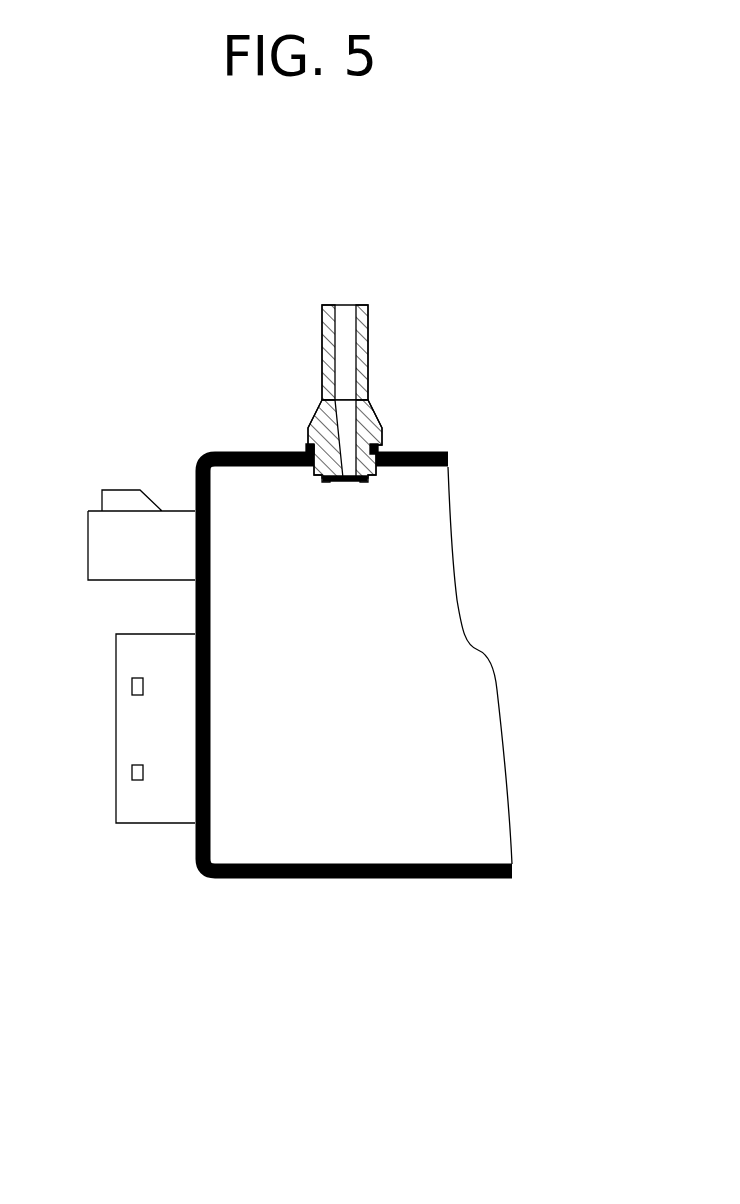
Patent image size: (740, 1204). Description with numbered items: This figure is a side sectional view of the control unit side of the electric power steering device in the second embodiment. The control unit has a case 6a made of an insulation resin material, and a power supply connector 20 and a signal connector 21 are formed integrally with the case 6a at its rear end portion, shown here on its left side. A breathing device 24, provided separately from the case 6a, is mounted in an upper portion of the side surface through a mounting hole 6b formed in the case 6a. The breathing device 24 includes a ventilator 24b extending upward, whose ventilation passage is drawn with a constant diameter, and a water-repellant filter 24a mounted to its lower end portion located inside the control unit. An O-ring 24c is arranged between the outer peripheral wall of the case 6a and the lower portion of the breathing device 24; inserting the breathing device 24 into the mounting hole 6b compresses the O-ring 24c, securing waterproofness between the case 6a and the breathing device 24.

The case 6a is at (323, 887).
The mounting hole 6b is at (378, 463).
The power supply connector 20 is at (135, 483).
The signal connector 21 is at (162, 828).
The breathing device 24 is at (387, 334).
The water-repellant filter 24a is at (318, 428).
The ventilator 24b is at (329, 304).
The O-ring 24c is at (383, 447).